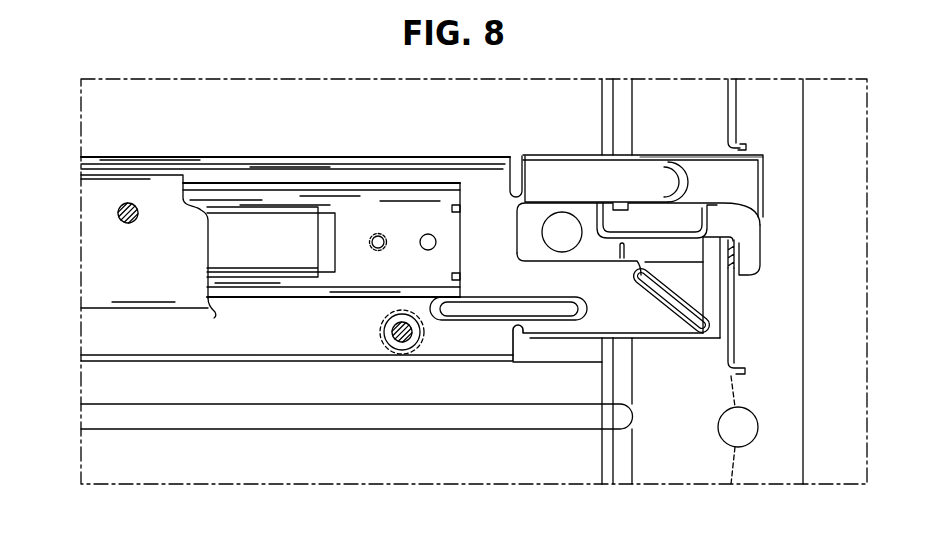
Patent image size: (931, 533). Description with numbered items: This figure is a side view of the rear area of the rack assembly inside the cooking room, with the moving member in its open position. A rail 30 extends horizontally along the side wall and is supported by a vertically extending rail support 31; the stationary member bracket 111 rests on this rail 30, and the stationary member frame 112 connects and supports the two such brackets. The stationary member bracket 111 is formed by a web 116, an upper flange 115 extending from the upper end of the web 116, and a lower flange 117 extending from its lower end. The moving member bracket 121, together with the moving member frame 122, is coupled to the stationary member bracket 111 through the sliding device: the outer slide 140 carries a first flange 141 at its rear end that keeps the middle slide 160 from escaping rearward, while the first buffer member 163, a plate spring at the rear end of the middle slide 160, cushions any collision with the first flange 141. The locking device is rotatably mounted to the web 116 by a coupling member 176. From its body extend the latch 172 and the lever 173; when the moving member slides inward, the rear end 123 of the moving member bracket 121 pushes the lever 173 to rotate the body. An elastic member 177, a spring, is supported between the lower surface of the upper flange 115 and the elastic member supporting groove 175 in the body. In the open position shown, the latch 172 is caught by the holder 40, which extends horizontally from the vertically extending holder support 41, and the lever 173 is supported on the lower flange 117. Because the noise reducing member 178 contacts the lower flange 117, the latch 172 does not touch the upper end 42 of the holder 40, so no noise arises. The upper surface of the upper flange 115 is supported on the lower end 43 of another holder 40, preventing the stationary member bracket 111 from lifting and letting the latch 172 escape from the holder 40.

The rail 30 is at (447, 430).
The rail support 31 is at (603, 463).
The holder 40 is at (731, 91).
The holder support 41 is at (777, 425).
The upper end of the holder 42 is at (736, 247).
The lower end of another holder 43 is at (746, 147).
The stationary member bracket 111 is at (351, 340).
The stationary member frame 112 is at (414, 334).
The upper flange 115 is at (670, 153).
The web 116 is at (582, 177).
The lower flange 117 is at (650, 340).
The moving member bracket 121 is at (103, 268).
The moving member frame 122 is at (118, 215).
The rear end of the moving member bracket 123 is at (214, 318).
The outer slide 140 is at (362, 215).
The first flange 141 is at (441, 222).
The middle slide 160 is at (240, 247).
The first buffer member 163 is at (330, 248).
The latch 172 is at (747, 262).
The lever 173 is at (690, 305).
The elastic member supporting groove 175 is at (693, 211).
The coupling member 176 is at (557, 223).
The elastic member 177 is at (688, 176).
The noise reducing member 178 is at (677, 285).